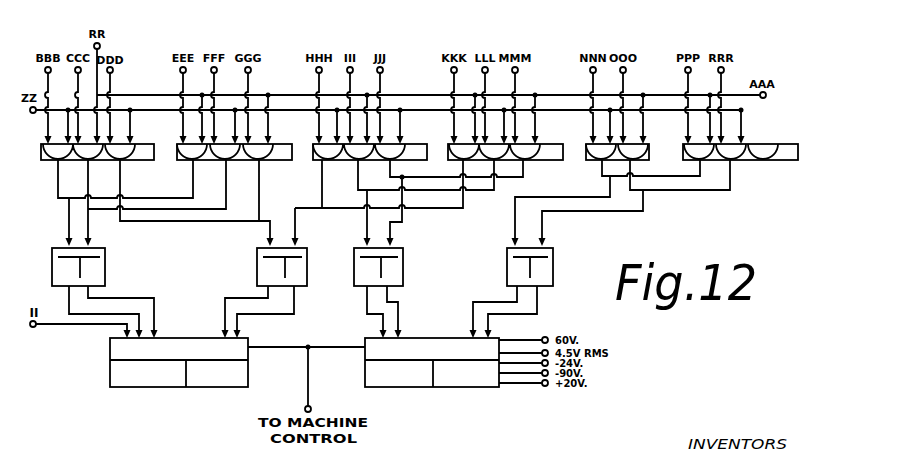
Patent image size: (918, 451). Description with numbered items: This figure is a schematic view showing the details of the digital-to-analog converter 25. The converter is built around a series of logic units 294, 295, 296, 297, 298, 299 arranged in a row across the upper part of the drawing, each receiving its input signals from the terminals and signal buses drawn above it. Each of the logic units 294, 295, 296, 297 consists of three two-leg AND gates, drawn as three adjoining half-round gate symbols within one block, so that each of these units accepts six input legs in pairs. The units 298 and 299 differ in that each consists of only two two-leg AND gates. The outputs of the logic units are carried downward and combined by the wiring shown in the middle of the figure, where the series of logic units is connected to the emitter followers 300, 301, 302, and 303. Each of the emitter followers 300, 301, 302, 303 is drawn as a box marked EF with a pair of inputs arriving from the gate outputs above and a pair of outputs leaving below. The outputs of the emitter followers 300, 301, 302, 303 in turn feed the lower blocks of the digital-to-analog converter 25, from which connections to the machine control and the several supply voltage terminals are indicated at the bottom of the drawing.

The logic unit 294 is at (145, 152).
The logic unit 295 is at (283, 152).
The logic unit 296 is at (418, 153).
The logic unit 297 is at (555, 153).
The logic unit 298 is at (645, 157).
The logic unit 299 is at (785, 153).
The emitter follower 300 is at (98, 273).
The emitter follower 301 is at (300, 273).
The emitter follower 302 is at (398, 273).
The emitter follower 303 is at (548, 273).
The digital-to-analog converter 25 is at (118, 376).